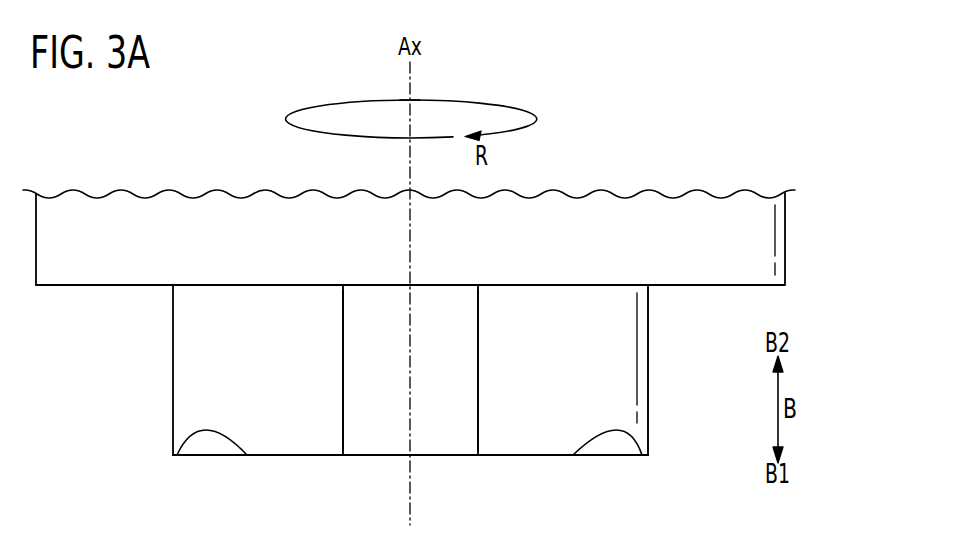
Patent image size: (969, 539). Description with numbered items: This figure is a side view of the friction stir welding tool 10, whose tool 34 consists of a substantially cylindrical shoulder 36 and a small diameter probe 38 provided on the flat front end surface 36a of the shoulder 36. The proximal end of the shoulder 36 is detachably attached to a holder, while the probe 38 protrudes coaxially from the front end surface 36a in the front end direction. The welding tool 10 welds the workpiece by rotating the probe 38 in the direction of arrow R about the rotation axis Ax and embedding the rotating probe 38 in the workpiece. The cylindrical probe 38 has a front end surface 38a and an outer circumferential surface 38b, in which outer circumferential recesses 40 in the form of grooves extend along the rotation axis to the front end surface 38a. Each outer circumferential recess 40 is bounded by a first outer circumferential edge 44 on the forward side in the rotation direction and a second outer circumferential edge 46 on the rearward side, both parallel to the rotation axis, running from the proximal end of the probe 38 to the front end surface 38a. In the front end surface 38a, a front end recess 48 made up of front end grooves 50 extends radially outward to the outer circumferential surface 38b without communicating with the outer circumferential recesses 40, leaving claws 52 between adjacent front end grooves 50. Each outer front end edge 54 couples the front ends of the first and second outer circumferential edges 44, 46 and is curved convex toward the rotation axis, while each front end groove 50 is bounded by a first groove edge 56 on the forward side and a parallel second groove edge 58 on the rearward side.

The welding tool 10 is at (690, 131).
The tool 34 is at (727, 131).
The shoulder 36 is at (108, 215).
The front end surface of the shoulder 36a is at (64, 288).
The probe 38 is at (145, 438).
The front end surface of the probe 38a is at (518, 458).
The outer circumferential surface of the probe 38b is at (625, 333).
The outer circumferential recess 40 is at (425, 328).
The first outer circumferential edge 44 is at (343, 322).
The second outer circumferential edge 46 is at (478, 322).
The front end recess 48 is at (623, 471).
The front end groove 50 is at (215, 445).
The claw 52 is at (324, 458).
The outer front end edge 54 is at (450, 458).
The first groove edge 56 is at (180, 458).
The second groove edge 58 is at (246, 456).